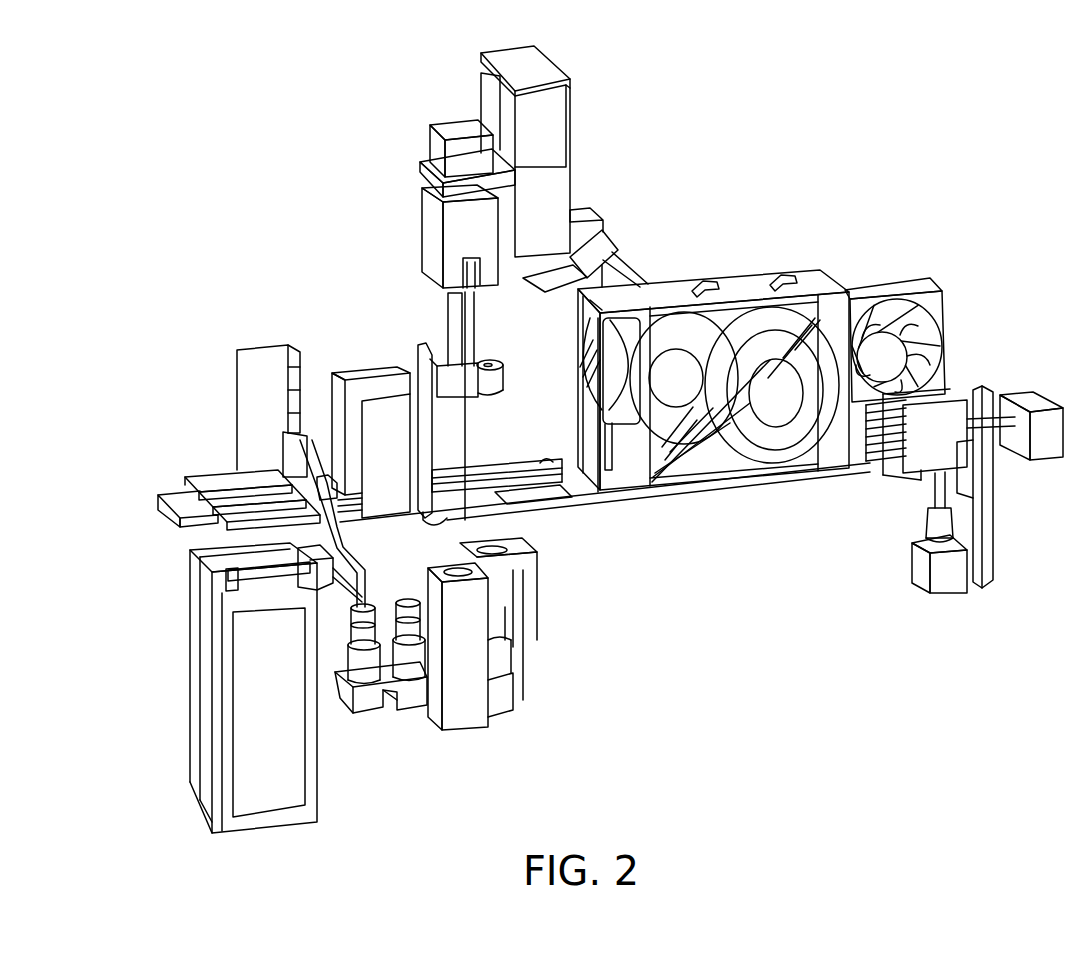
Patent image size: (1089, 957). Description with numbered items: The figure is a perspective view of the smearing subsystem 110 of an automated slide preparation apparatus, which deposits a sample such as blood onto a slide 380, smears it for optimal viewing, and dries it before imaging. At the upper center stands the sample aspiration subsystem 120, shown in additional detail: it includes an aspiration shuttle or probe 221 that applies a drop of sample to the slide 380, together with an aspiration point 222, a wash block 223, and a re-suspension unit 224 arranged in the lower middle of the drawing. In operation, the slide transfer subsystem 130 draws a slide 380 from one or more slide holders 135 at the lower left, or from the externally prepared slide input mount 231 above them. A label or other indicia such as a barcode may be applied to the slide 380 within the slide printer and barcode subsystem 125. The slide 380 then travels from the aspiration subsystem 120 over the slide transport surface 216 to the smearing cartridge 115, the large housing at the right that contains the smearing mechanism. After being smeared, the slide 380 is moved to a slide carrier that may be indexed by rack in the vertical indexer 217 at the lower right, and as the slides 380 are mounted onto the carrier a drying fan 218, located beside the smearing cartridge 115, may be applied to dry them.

The smearing subsystem 110 is at (212, 59).
The sample aspiration subsystem 120 is at (590, 139).
The aspiration shuttle (or probe) 221 is at (452, 238).
The smearing cartridge 115 is at (725, 352).
The drying fan 218 is at (918, 300).
The slide 380 is at (505, 500).
The vertical indexer 217 is at (950, 573).
The slide transport surface 216 is at (543, 512).
The slide printer and barcode subsystem 125 is at (353, 388).
The externally prepared slide input mount 231 is at (222, 495).
The slide transfer subsystem 130 is at (255, 578).
The slide holder 135 is at (245, 737).
The re-suspension unit 224 is at (388, 727).
The wash block 223 is at (458, 708).
The aspiration point 222 is at (537, 660).